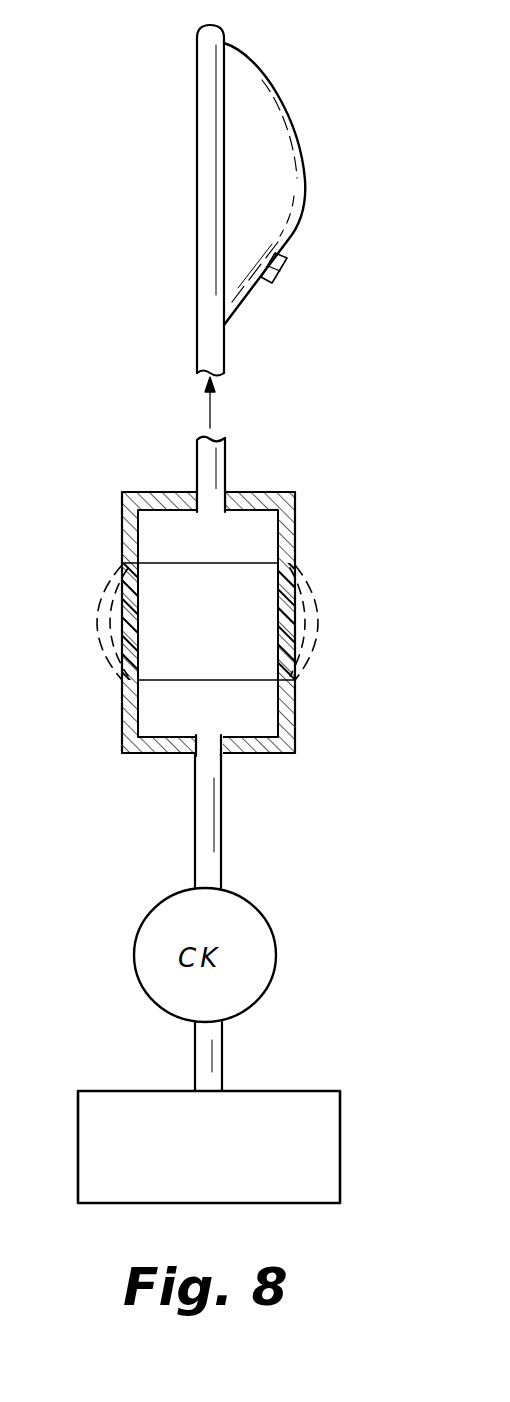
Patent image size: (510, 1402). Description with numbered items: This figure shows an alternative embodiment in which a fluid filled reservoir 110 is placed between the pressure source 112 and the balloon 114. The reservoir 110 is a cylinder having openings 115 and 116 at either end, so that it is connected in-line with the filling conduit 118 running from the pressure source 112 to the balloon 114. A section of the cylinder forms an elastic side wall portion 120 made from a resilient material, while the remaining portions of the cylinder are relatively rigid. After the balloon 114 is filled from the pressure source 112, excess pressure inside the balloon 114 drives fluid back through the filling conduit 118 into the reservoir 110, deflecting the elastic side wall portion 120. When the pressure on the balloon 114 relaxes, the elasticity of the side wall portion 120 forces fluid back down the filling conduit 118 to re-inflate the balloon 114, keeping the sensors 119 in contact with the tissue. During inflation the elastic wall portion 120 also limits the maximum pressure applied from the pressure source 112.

The fluid filled reservoir 110 is at (228, 624).
The pressure source 112 is at (328, 1157).
The balloon 114 is at (282, 124).
The opening 115 is at (219, 750).
The opening 116 is at (280, 493).
The filling conduit 118 is at (213, 453).
The sensors 119 is at (290, 267).
The elastic side wall portion 120 is at (285, 613).